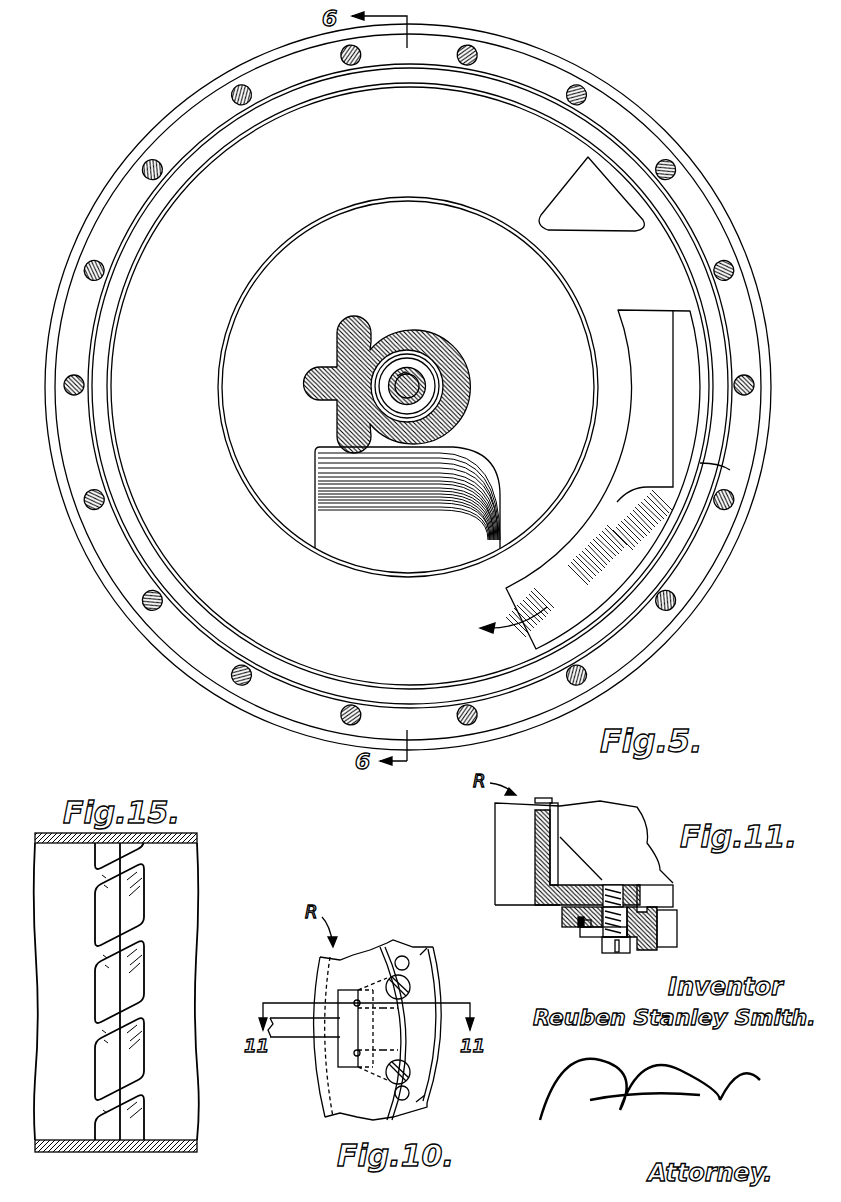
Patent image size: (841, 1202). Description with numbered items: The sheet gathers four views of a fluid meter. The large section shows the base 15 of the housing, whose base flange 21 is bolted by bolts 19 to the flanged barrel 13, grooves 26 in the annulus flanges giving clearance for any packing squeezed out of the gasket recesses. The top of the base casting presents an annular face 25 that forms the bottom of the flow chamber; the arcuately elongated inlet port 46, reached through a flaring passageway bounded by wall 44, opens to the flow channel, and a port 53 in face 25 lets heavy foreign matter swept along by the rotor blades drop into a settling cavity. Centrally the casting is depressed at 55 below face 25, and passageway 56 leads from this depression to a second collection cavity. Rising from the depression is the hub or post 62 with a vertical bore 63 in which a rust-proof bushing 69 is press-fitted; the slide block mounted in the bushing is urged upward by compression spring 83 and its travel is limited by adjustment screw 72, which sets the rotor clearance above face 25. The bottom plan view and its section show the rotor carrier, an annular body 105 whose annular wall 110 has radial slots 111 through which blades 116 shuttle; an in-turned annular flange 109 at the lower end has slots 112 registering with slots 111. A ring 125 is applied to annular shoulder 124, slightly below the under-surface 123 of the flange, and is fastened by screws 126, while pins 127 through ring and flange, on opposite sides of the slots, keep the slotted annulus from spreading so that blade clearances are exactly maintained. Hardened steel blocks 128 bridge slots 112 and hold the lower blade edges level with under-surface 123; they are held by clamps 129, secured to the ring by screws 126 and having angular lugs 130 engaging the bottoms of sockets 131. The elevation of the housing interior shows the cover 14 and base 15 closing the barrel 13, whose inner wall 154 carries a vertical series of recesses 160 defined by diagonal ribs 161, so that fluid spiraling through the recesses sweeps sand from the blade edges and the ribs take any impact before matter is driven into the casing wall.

In FIG. 5, the base 15 is at (618, 92).
In FIG. 15, the base 15 is at (186, 1150).
In FIG. 5, the bolts 19 is at (94, 265).
In FIG. 5, the base flange 21 is at (722, 243).
In FIG. 5, the annular face 25 is at (663, 265).
In FIG. 5, the port 53 is at (597, 183).
In FIG. 5, the depression 55 is at (262, 462).
In FIG. 5, the passageway 56 is at (390, 548).
In FIG. 5, the hub or post 62 is at (451, 414).
In FIG. 5, the bore 63 is at (445, 386).
In FIG. 5, the bushing 69 is at (432, 380).
In FIG. 5, the adjustment screw 72 is at (415, 384).
In FIG. 5, the compression spring 83 is at (403, 372).
In FIG. 5, the grooves 26 is at (730, 470).
In FIG. 5, the inlet port 46 is at (623, 550).
In FIG. 5, the wall 44 is at (593, 593).
In FIG. 15, the cover 14 is at (197, 838).
In FIG. 15, the barrel 13 is at (199, 887).
In FIG. 15, the casing wall 154 is at (173, 923).
In FIG. 15, the diagonal ribs 161 is at (130, 857).
In FIG. 15, the recesses 160 is at (133, 905).
In FIG. 10, the annular body member or carrier 105 is at (320, 971).
In FIG. 11, the annular body member or carrier 105 is at (580, 812).
In FIG. 10, the in-turned annular flange 109 is at (367, 963).
In FIG. 11, the in-turned annular flange 109 is at (633, 885).
In FIG. 11, the annular wall 110 is at (535, 850).
In FIG. 11, the radial slots 111 is at (543, 800).
In FIG. 11, the blades 116 is at (508, 875).
In FIG. 10, the under-surface 123 is at (340, 1090).
In FIG. 11, the under-surface 123 is at (588, 906).
In FIG. 10, the annular shoulder 124 is at (417, 957).
In FIG. 11, the annular shoulder 124 is at (640, 907).
In FIG. 10, the ring 125 is at (413, 950).
In FIG. 11, the ring 125 is at (650, 922).
In FIG. 10, the screws 126 is at (403, 990).
In FIG. 11, the screws 126 is at (603, 947).
In FIG. 10, the pins 127 is at (403, 965).
In FIG. 10, the blocks 128 is at (340, 960).
In FIG. 11, the blocks 128 is at (580, 920).
In FIG. 10, the clamps 129 is at (400, 1053).
In FIG. 11, the clamps 129 is at (603, 934).
In FIG. 11, the angular lugs 130 is at (590, 926).
In FIG. 10, the sockets 131 is at (358, 1003).
In FIG. 11, the sockets 131 is at (580, 927).
In FIG. 10, the slots 112 is at (325, 1035).